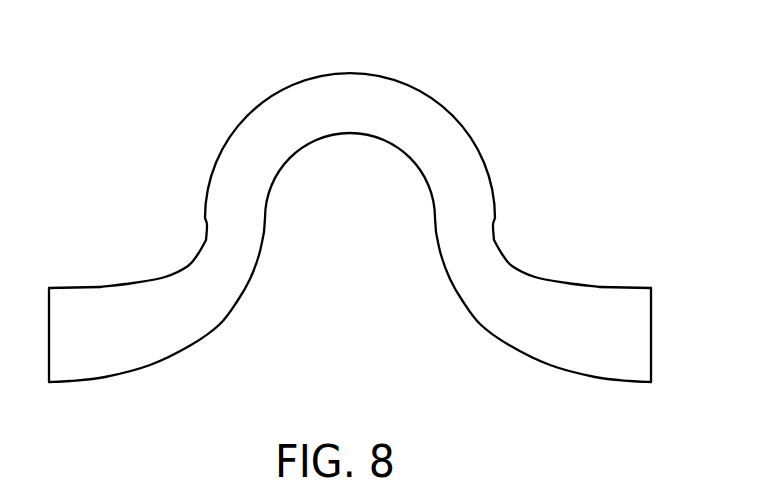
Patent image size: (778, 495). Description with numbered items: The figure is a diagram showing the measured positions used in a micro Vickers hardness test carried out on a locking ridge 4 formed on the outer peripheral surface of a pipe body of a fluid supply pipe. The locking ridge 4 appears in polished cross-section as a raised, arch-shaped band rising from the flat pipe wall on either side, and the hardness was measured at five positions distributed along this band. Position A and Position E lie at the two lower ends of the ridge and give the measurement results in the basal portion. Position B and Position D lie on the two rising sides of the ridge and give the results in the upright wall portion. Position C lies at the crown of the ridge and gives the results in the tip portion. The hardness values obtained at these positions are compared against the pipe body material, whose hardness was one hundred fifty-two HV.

The locking ridge 4 is at (350, 223).
The Position A is at (156, 307).
The Position B is at (247, 178).
The Position C is at (350, 115).
The Position D is at (452, 178).
The Position E is at (543, 307).